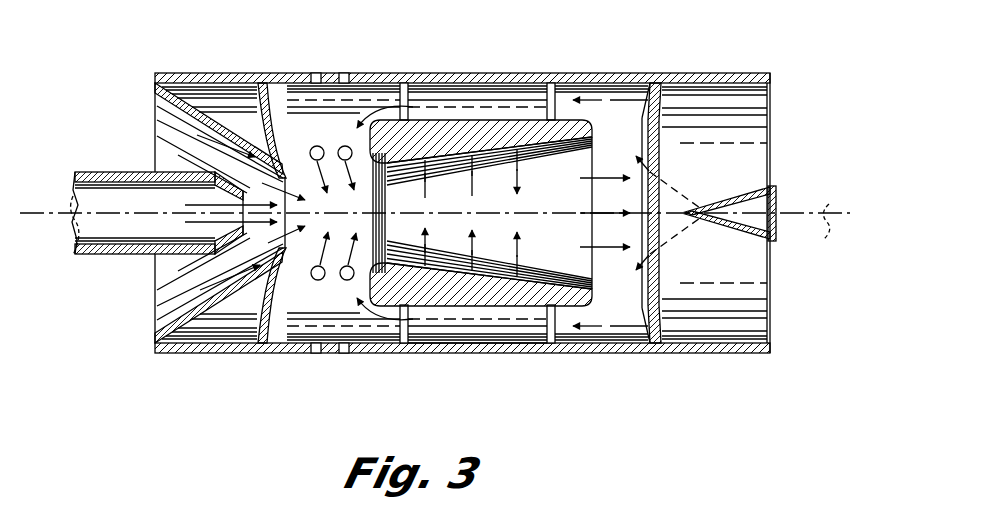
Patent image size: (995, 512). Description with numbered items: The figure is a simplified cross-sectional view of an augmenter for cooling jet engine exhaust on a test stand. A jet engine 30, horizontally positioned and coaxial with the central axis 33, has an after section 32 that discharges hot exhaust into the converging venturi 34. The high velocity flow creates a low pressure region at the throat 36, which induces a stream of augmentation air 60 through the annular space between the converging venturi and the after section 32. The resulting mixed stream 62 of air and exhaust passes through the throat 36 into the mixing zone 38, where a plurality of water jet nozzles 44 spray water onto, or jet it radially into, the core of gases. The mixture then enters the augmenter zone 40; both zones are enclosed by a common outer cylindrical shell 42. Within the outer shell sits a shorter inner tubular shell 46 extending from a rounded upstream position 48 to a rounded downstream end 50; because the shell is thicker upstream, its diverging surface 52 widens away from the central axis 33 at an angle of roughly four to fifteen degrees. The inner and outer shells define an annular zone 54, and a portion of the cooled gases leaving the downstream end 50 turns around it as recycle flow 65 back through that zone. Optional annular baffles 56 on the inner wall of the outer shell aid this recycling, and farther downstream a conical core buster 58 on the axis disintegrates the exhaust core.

The jet engine 30 is at (103, 172).
The after section 32 is at (220, 175).
The central axis 33 is at (67, 233).
The venturi 34 is at (232, 107).
The throat 36 is at (282, 157).
The mixing zone 38 is at (333, 211).
The augmenter zone 40 is at (610, 236).
The outer cylindrical shell 42 is at (413, 350).
The water jet nozzles 44 is at (347, 78).
The inner tubular shell 46 is at (475, 133).
The upstream position 48 is at (380, 237).
The downstream end 50 is at (580, 156).
The diverging surface 52 is at (510, 142).
The annular zone 54 is at (443, 100).
The annular baffles 56 is at (668, 85).
The conical core buster 58 is at (750, 192).
The augmentation air 60 is at (160, 117).
The mixed stream 62 is at (193, 222).
The recycle flow 65 is at (390, 315).